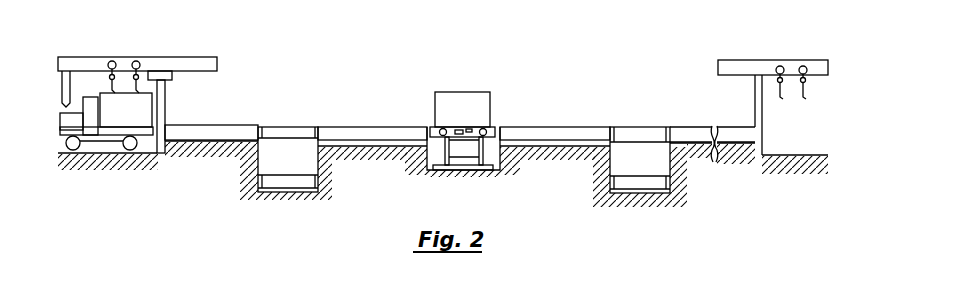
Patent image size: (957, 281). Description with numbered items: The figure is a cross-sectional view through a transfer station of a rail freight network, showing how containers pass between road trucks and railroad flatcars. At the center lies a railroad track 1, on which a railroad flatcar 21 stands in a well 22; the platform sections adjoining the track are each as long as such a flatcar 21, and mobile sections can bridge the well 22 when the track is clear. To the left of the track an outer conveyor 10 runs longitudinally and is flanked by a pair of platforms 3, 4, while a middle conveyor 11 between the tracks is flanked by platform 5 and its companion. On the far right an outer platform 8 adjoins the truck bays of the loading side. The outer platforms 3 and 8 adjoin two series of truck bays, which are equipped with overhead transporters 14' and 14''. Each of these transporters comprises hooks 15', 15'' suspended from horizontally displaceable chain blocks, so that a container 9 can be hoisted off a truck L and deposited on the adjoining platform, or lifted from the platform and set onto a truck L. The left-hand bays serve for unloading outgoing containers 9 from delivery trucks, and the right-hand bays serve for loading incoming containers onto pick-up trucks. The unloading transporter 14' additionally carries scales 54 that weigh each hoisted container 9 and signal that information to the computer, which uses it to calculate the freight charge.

The railroad track 1 is at (467, 172).
The platform 3 is at (211, 124).
The platform 4 is at (362, 125).
The platform 5 is at (561, 125).
The platform 8 is at (748, 137).
The container 9 is at (142, 107).
The outer conveyor 10 is at (279, 122).
The middle conveyor 11 is at (640, 125).
The overhead transporter 14' is at (137, 64).
The overhead transporter 14'' is at (773, 89).
The hooks 15' is at (127, 57).
The hooks 15'' is at (816, 98).
The railroad flatcar 21 is at (491, 127).
The well 22 is at (433, 152).
The scales 54 is at (172, 73).
The truck L is at (102, 137).